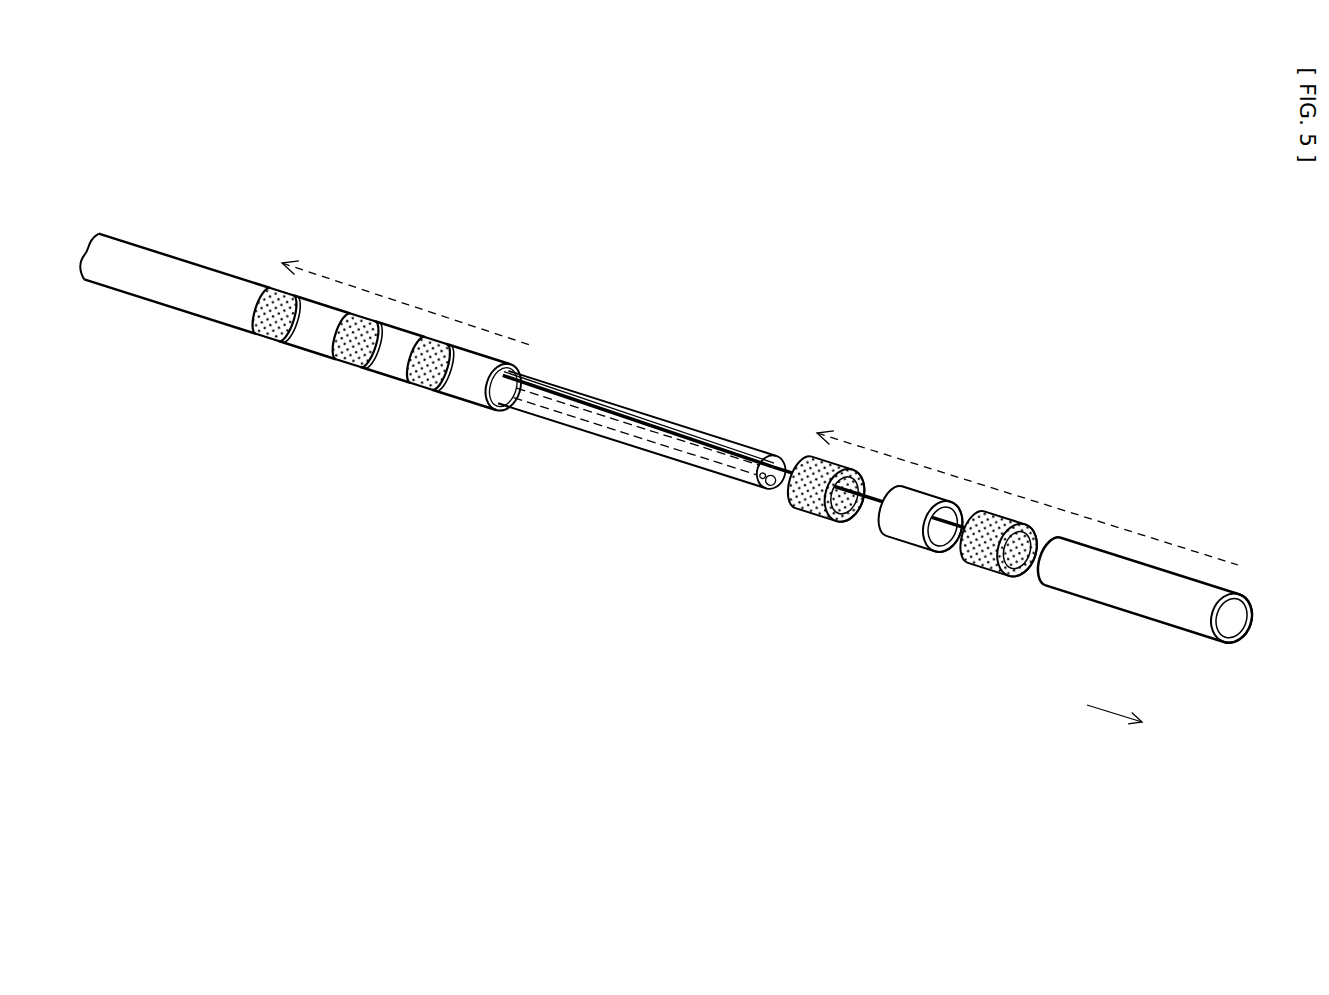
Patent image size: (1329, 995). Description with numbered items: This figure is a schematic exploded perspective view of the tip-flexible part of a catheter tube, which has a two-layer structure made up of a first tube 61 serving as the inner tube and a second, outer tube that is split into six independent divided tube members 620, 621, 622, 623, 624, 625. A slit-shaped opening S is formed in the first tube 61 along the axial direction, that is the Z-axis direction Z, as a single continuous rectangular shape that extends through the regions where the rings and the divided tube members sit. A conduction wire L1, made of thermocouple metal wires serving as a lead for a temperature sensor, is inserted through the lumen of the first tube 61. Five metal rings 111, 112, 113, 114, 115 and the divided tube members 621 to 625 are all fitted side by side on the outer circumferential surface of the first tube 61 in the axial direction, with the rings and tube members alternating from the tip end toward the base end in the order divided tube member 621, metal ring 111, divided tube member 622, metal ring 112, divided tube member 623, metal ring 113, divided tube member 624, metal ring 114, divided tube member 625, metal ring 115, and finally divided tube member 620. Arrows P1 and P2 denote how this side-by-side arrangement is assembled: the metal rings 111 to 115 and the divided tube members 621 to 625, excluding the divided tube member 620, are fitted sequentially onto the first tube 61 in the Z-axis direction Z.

The divided tube member 620 is at (166, 270).
The divided tube member 621 is at (1077, 555).
The divided tube member 622 is at (912, 500).
The divided tube member 623 is at (472, 367).
The divided tube member 624 is at (400, 340).
The divided tube member 625 is at (328, 318).
The first tube 61 is at (633, 447).
The metal ring 111 is at (982, 553).
The metal ring 112 is at (810, 500).
The metal ring 113 is at (427, 387).
The metal ring 114 is at (352, 360).
The metal ring 115 is at (277, 336).
The opening S is at (640, 417).
The conduction wire L1 is at (873, 507).
The arrow P1 is at (508, 340).
The arrow P2 is at (1177, 548).
The Z-axis direction Z is at (1126, 724).